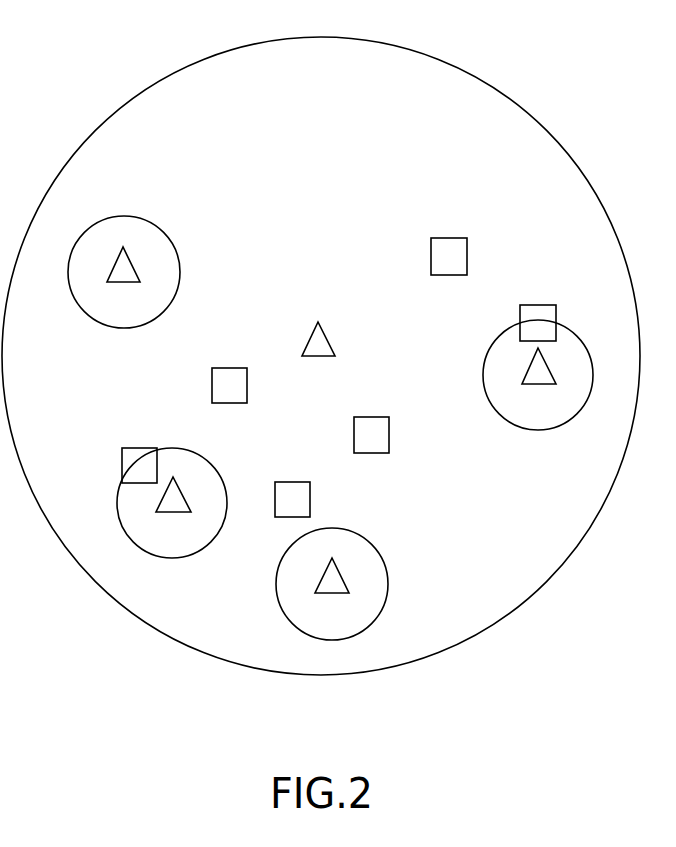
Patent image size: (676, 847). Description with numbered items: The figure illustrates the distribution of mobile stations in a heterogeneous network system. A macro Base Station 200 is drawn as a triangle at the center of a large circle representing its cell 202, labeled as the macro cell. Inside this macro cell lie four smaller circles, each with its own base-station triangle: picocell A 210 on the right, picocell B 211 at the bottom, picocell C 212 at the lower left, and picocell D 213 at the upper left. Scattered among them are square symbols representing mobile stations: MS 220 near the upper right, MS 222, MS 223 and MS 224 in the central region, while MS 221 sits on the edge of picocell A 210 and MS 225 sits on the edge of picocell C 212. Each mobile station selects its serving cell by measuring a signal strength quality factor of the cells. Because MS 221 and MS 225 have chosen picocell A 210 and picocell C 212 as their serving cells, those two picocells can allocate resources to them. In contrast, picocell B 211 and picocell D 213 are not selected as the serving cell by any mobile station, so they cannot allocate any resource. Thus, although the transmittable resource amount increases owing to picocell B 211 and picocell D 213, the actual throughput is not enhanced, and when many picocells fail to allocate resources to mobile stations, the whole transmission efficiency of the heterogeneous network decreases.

The macro Base Station 200 is at (329, 344).
The cell 202 is at (393, 44).
The picocell A 210 is at (577, 336).
The picocell B 211 is at (372, 544).
The picocell C 212 is at (212, 464).
The picocell D 213 is at (164, 232).
The Mobile Station 220 is at (461, 238).
The Mobile Station 221 is at (550, 305).
The Mobile Station 222 is at (383, 417).
The Mobile Station 223 is at (240, 368).
The Mobile Station 224 is at (304, 482).
The Mobile Station 225 is at (143, 448).